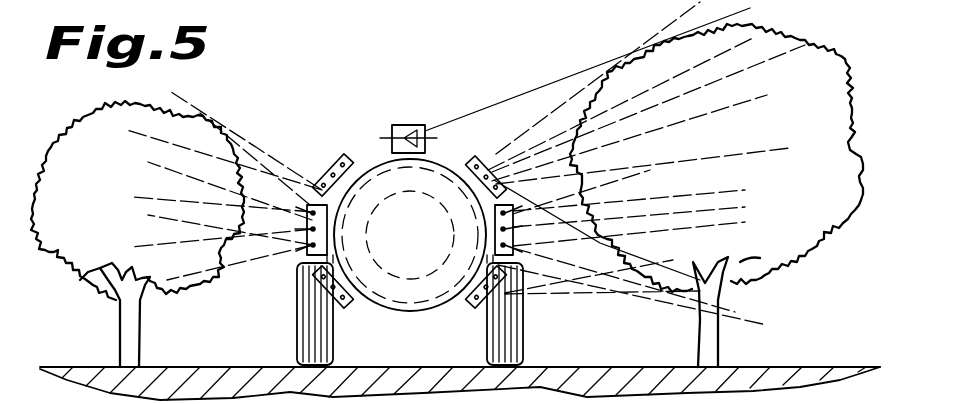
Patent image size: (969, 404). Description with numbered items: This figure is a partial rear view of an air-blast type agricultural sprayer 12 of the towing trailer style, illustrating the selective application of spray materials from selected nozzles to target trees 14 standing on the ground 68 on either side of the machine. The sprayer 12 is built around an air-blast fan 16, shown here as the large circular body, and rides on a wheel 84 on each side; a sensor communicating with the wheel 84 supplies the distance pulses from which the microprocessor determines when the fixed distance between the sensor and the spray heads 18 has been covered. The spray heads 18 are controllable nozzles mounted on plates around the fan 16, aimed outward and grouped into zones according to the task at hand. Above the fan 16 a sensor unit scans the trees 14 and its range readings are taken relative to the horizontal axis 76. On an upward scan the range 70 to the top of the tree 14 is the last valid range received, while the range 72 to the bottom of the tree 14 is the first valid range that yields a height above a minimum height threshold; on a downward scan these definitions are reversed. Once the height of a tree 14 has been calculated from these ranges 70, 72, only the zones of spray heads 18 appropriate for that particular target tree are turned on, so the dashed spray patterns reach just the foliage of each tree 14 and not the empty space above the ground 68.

The air-blast type agricultural sprayer 12 is at (381, 218).
The target tree 14 is at (78, 140).
The air-blast fan 16 is at (422, 249).
The spray heads 18 is at (337, 157).
The ground 68 is at (823, 366).
The range to the top of the tree 70 is at (481, 108).
The range to the bottom of the tree 72 is at (642, 258).
The horizontal axis 76 is at (381, 138).
The wheel 84 is at (298, 330).